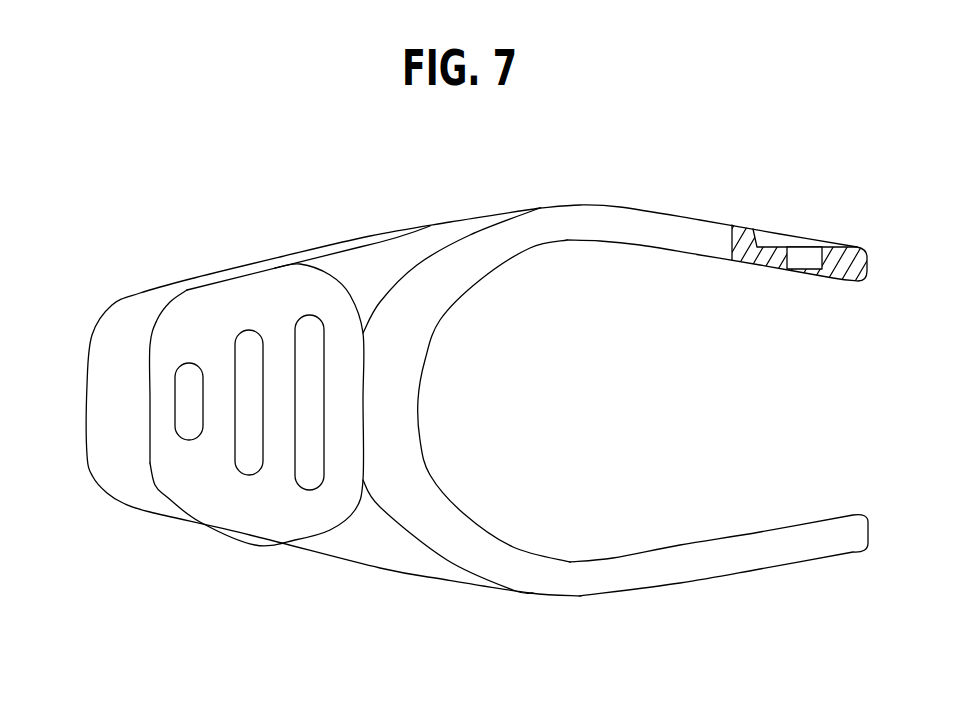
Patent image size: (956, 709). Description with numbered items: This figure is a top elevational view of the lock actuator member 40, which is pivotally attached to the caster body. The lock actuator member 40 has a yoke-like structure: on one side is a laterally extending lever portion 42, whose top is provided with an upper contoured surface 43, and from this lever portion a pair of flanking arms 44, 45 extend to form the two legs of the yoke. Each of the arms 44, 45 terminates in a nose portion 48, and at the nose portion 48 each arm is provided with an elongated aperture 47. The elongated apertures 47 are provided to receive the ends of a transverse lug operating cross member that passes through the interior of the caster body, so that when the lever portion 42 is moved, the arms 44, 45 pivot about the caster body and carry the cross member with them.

The lock actuator member 40 is at (408, 213).
The lever portion 42 is at (123, 422).
The upper contoured surface 43 is at (230, 318).
The flanking arm 44 is at (722, 560).
The flanking arm 45 is at (680, 233).
The elongated aperture 47 is at (805, 258).
The nose portion 48 is at (855, 258).